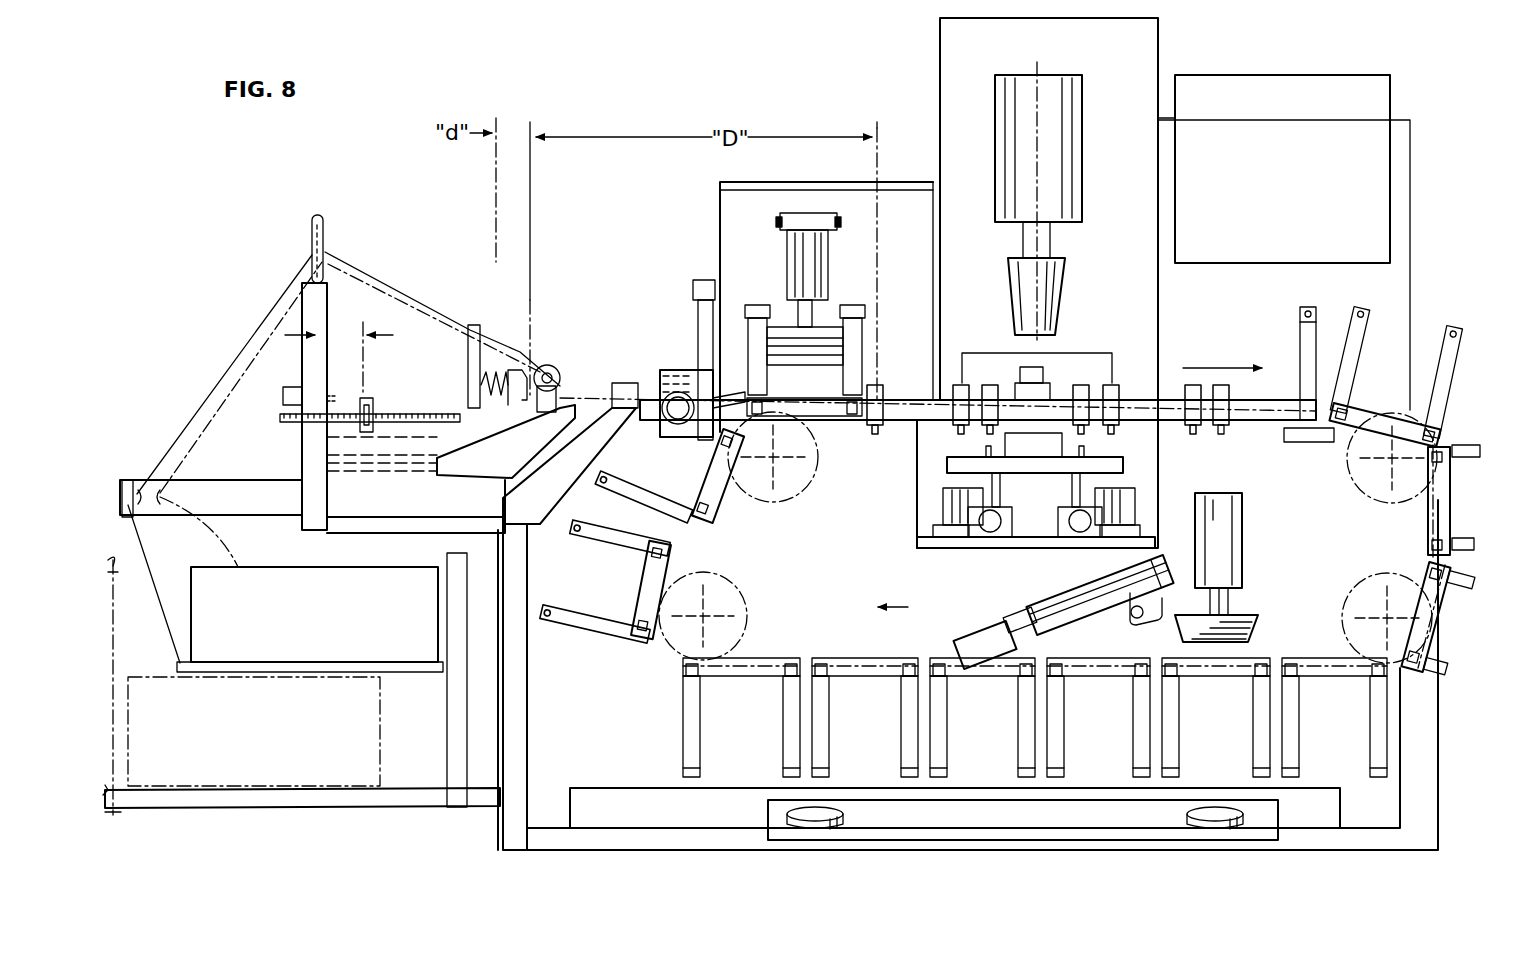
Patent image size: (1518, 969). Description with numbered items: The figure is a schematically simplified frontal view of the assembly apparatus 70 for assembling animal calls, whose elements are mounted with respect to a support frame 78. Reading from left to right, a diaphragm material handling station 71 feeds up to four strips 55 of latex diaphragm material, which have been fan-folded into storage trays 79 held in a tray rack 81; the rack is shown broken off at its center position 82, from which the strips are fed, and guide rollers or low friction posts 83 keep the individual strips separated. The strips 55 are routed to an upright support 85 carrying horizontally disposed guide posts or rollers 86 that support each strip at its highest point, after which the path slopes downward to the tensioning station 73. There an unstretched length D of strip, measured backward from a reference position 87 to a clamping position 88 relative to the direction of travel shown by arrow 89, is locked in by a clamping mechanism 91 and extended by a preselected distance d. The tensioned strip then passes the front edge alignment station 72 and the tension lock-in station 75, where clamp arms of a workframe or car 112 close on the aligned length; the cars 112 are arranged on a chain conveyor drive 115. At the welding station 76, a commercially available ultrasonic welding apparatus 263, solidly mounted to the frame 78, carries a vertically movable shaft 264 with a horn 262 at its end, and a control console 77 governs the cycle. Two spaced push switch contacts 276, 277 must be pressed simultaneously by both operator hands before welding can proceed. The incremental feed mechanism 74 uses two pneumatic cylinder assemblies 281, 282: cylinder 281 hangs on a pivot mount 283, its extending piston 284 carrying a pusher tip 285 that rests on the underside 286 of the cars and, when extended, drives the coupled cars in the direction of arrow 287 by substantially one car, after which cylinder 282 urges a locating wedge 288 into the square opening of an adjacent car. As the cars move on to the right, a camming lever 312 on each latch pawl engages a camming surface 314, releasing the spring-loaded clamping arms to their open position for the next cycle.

The strip of diaphragm material 55 is at (210, 402).
The assembly apparatus 70 is at (918, 120).
The diaphragm material handling station 71 is at (228, 345).
The front edge alignment station 72 is at (675, 358).
The diaphragm material tensioning station 73 is at (432, 296).
The incremental feed mechanism 74 is at (1037, 608).
The tension lock-in station 75 is at (778, 287).
The welding station 76 is at (1082, 327).
The control console 77 is at (1392, 88).
The apparatus support structure or frame 78 is at (1441, 719).
The storage tray 79 is at (326, 567).
The tray rack 81 is at (320, 808).
The center position of the rack 82 is at (113, 632).
The guide roller or low friction post 83 is at (127, 478).
The upright support 85 is at (303, 366).
The guide post or roller 86 is at (312, 246).
The reference position 87 is at (878, 296).
The clamping position 88 is at (531, 282).
The arrow indicating direction of travel 89 is at (1215, 368).
The clamping mechanism 91 is at (522, 353).
The workframe or car 112 is at (820, 417).
The chain conveyor drive 115 is at (1357, 585).
The welding head or horn 262 is at (1008, 288).
The ultrasonic welding apparatus 263 is at (1160, 55).
The vertically movable shaft 264 is at (1052, 242).
The push switch contact 276 is at (846, 822).
The push switch contact 277 is at (1187, 820).
The pneumatic cylinder assembly 281 is at (1113, 575).
The pneumatic cylinder assembly 282 is at (1244, 523).
The pivot mount 283 is at (1137, 622).
The extending piston 284 is at (1014, 618).
The pusher tip 285 is at (962, 635).
The underside of the cars 286 is at (918, 641).
The arrow indicating indexing direction 287 is at (908, 605).
The locating wedge 288 is at (1250, 617).
The camming lever 312 is at (1222, 433).
The camming surface 314 is at (1290, 443).